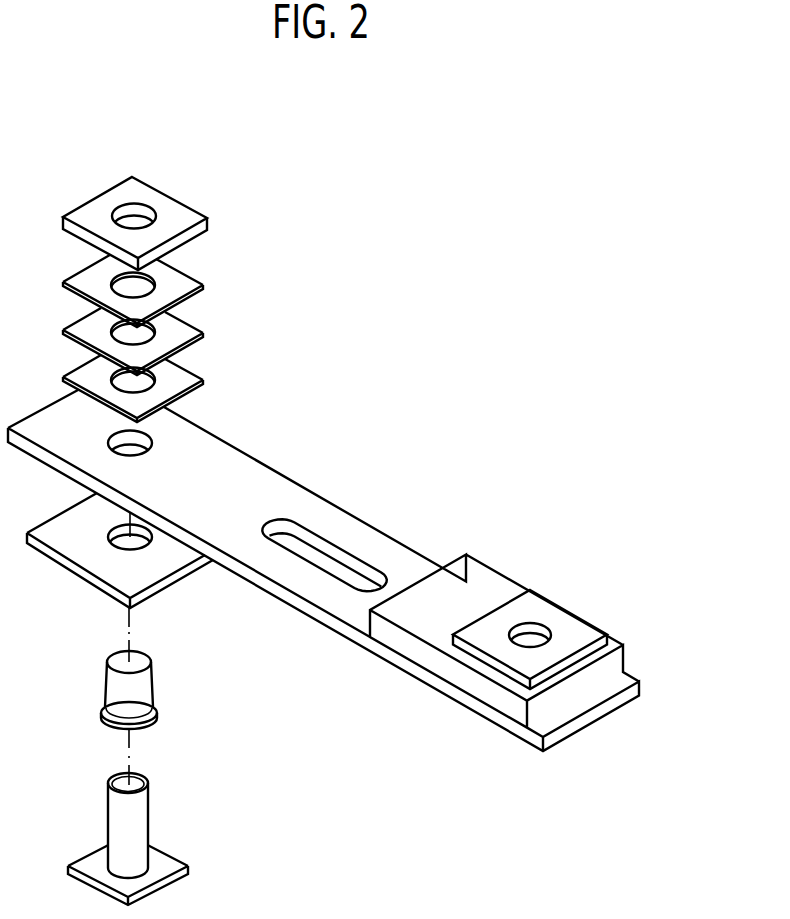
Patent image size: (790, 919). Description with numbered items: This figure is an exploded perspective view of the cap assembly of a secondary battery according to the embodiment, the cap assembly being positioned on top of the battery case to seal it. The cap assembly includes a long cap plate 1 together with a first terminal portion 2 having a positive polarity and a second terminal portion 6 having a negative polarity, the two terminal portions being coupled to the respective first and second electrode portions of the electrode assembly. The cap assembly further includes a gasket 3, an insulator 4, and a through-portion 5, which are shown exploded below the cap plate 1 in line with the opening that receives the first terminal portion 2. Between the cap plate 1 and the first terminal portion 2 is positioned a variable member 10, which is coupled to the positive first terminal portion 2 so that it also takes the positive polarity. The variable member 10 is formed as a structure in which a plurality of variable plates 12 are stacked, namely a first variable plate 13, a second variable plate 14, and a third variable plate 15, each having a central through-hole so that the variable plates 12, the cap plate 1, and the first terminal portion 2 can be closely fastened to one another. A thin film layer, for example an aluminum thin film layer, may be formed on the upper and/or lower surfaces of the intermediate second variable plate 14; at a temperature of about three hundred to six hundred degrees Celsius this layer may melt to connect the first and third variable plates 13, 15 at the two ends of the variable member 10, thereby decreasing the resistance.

The variable member 10 is at (307, 260).
The cap plate 1 is at (258, 480).
The first terminal portion 2 is at (167, 215).
The variable plates 12 is at (185, 338).
The third variable plate 15 is at (187, 285).
The second variable plate 14 is at (190, 333).
The first variable plate 13 is at (167, 386).
The gasket 3 is at (152, 590).
The insulator 4 is at (143, 695).
The through-portion 5 is at (140, 820).
The second terminal portion 6 is at (572, 630).